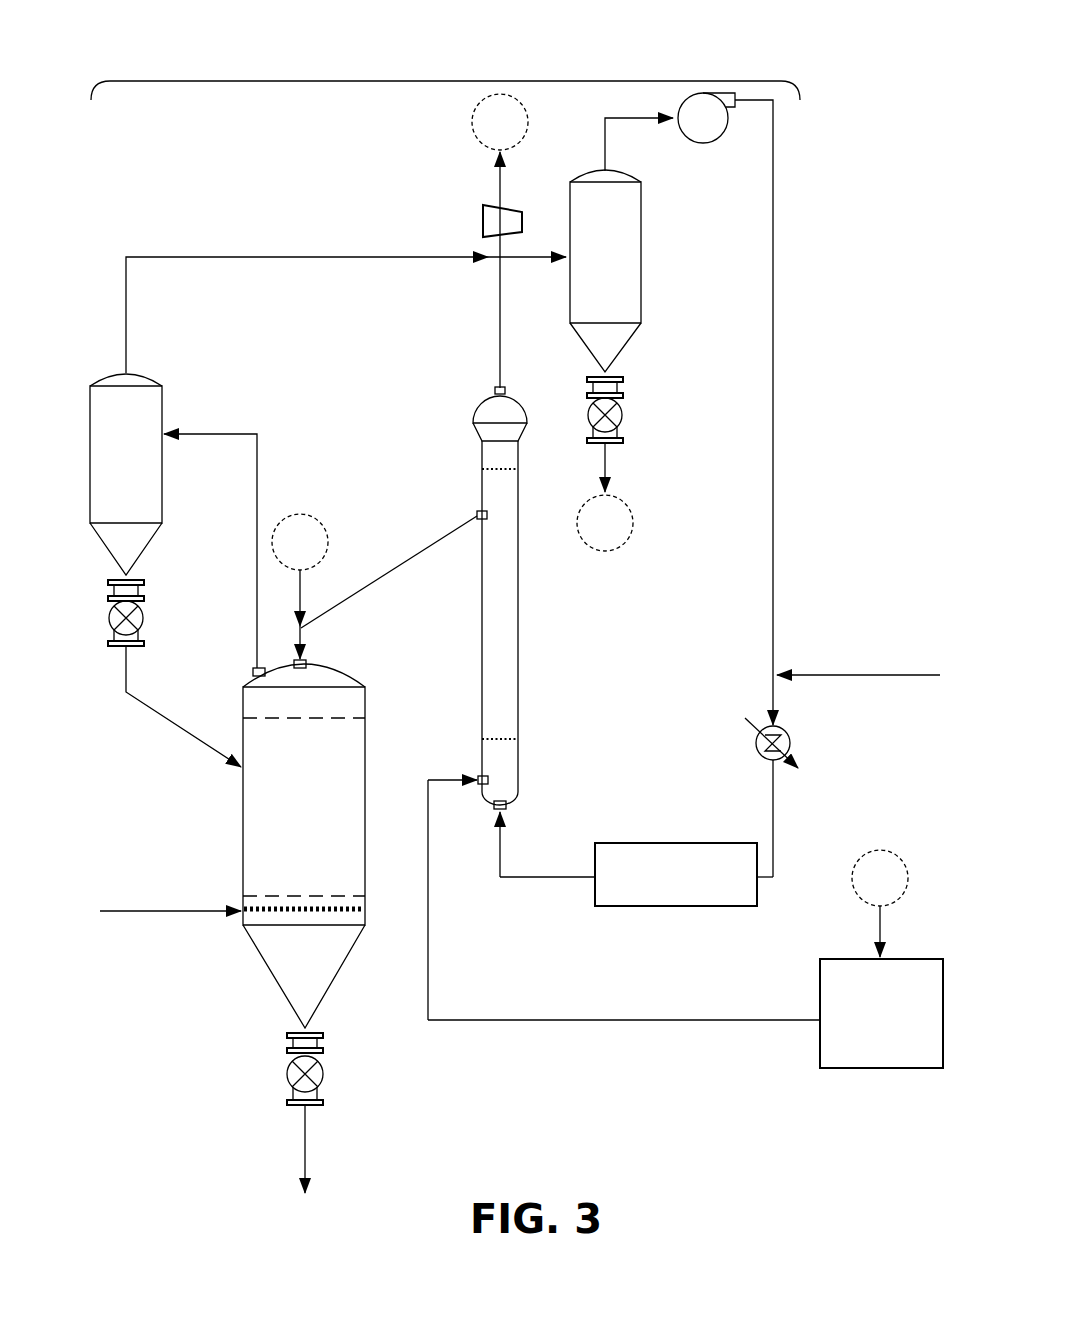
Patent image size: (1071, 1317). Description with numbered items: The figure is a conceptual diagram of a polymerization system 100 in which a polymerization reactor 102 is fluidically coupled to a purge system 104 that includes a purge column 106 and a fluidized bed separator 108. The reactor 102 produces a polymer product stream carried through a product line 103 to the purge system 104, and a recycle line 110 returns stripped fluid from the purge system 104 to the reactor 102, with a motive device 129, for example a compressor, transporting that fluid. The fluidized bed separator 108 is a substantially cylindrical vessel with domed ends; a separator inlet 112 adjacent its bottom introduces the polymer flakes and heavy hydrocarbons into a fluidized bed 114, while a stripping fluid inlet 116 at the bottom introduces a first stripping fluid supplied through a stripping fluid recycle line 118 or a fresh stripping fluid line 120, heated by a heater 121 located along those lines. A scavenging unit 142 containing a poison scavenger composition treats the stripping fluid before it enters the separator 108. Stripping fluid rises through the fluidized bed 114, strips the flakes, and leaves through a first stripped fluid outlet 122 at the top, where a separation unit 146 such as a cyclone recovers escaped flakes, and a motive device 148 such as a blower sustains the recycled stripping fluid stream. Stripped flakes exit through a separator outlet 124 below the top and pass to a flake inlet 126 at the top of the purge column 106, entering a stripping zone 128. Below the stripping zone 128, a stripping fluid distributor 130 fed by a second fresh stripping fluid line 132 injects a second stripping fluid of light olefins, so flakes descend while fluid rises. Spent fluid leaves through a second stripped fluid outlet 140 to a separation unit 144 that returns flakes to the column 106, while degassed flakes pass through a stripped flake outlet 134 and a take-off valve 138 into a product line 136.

The polymerization system 100 is at (166, 28).
The polymerization reactor 102 is at (881, 959).
The product line 103 is at (560, 1019).
The purge system 104 is at (445, 69).
The purge column 106 is at (241, 832).
The fluidized bed separator 108 is at (481, 488).
The recycle line 110 is at (499, 188).
The separator inlet 112 is at (478, 786).
The fluidized bed 114 is at (494, 604).
The stripping fluid inlet 116 is at (508, 805).
The stripping fluid recycle line 118 is at (774, 431).
The fresh stripping fluid line 120 is at (863, 674).
The heater 121 is at (793, 737).
The first stripped fluid outlet 122 is at (494, 390).
The separator outlet 124 is at (476, 514).
The flake inlet 126 is at (307, 660).
The stripping zone 128 is at (340, 823).
The motive device 129 is at (482, 224).
The stripping fluid distributor 130 is at (243, 905).
The second fresh stripping fluid line 132 is at (130, 910).
The stripped flake outlet 134 is at (286, 1037).
The product line 136 is at (306, 1167).
The take-off valve 138 is at (325, 1074).
The second stripped fluid outlet 140 is at (256, 667).
The scavenging unit 142 is at (684, 874).
The separation unit 144 is at (89, 455).
The separation unit 146 is at (642, 262).
The motive device 148 is at (712, 143).